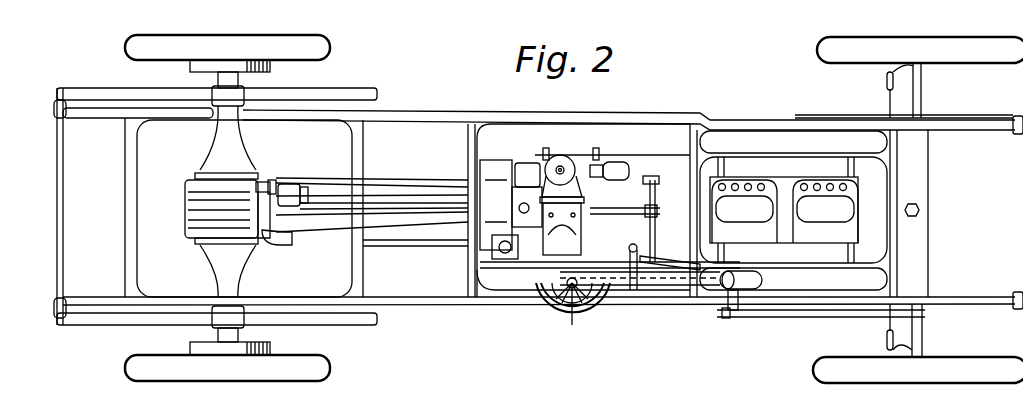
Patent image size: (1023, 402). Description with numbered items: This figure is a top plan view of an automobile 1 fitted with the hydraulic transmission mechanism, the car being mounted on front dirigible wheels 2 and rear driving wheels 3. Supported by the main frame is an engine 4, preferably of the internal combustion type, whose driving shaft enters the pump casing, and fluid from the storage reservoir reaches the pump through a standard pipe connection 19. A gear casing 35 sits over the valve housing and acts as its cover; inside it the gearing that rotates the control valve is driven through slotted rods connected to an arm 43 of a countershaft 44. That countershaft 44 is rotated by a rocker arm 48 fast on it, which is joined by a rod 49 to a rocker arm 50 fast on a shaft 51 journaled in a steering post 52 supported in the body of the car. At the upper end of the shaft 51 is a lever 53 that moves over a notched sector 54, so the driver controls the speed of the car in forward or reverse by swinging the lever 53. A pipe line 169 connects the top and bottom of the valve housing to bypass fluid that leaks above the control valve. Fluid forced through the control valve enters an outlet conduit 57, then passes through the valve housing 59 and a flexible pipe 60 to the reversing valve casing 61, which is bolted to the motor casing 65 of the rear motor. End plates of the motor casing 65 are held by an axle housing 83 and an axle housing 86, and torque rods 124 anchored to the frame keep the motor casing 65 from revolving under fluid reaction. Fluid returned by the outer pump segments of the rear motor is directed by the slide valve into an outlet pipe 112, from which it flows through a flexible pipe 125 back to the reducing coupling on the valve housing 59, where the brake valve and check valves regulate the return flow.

The automobile 1 is at (913, 238).
The front dirigible wheels 2 is at (918, 210).
The rear driving wheels 3 is at (227, 208).
The engine 4 is at (784, 210).
The standard pipe connection 19 is at (508, 260).
The gear casing 35 is at (567, 160).
The arm 43 is at (652, 180).
The countershaft 44 is at (633, 205).
The rocker arm 48 is at (636, 270).
The rod 49 is at (668, 262).
The rocker arm 50 is at (762, 279).
The shaft 51 is at (738, 300).
The steering post 52 is at (622, 286).
The lever 53 is at (556, 318).
The notched sector 54 is at (580, 300).
The outlet conduit 57 is at (536, 168).
The valve housing 59 is at (497, 175).
The flexible pipe 60 is at (410, 196).
The reversing valve casing 61 is at (292, 184).
The motor casing 65 is at (266, 182).
The axle housing 83 is at (218, 255).
The axle housing 86 is at (219, 160).
The outlet pipe 112 is at (280, 245).
The torque rods 124 is at (346, 178).
The flexible pipe 125 is at (420, 247).
The pipe line 169 is at (616, 165).